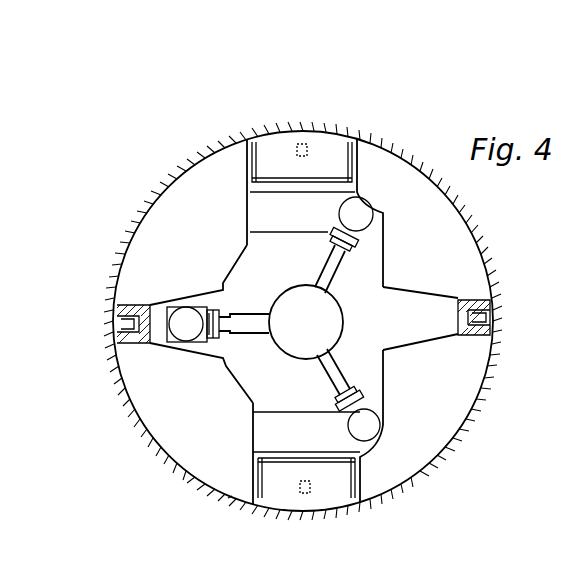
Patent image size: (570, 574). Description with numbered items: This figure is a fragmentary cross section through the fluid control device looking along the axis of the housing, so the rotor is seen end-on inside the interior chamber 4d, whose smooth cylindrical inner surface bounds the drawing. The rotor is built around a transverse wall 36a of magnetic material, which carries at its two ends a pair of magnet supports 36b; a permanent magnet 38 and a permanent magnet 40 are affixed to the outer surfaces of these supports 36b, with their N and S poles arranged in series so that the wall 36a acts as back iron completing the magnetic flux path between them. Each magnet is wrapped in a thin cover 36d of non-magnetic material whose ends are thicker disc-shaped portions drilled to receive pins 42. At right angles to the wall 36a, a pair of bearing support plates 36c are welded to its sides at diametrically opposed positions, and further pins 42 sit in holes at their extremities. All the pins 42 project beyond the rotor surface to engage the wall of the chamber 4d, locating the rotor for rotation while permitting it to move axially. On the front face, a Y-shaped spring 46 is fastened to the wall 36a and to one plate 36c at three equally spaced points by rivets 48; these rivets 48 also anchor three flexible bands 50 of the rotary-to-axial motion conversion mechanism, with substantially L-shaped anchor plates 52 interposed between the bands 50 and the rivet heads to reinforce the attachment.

The interior chamber 4d is at (184, 186).
The permanent magnet 38 is at (372, 150).
The transverse wall 36a is at (392, 346).
The magnet support 36b is at (257, 198).
The bearing support plate 36c is at (152, 302).
The cover 36d is at (280, 137).
The permanent magnet 40 is at (228, 498).
The pin 42 is at (320, 128).
The spring 46 is at (282, 356).
The rivet 48 is at (188, 326).
The flexible band 50 is at (220, 312).
The anchor plate 52 is at (203, 338).